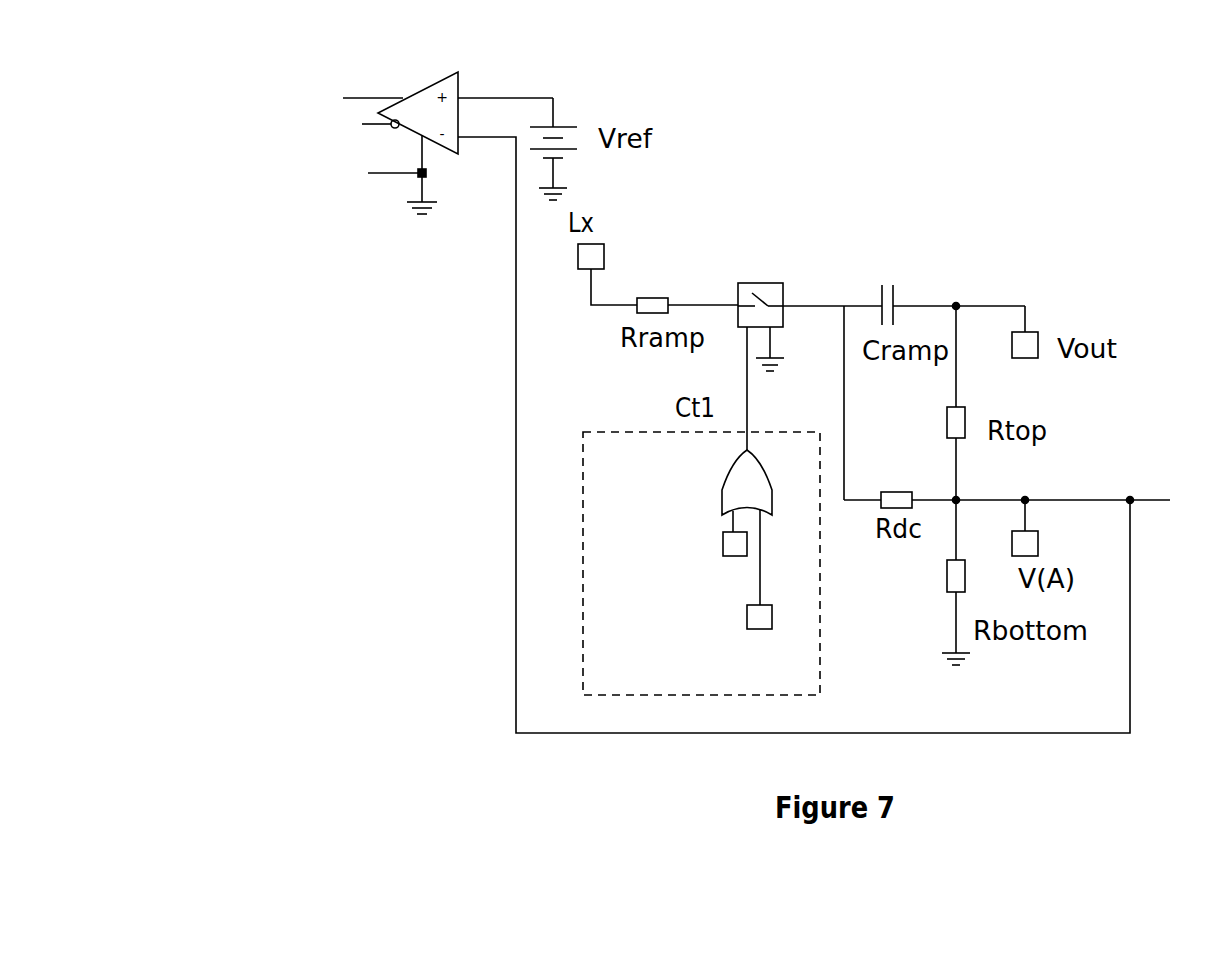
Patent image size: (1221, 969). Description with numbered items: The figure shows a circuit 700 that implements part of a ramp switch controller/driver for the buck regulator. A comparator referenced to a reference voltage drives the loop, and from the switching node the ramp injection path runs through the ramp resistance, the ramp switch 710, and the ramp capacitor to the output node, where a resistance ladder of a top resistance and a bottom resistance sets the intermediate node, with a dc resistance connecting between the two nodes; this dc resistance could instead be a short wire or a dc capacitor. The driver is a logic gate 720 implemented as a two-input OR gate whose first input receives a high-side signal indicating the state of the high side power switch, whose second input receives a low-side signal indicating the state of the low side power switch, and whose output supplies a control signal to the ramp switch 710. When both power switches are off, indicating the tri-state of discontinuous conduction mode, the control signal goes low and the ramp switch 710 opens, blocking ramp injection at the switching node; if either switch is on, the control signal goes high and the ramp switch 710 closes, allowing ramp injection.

The circuit 700 is at (338, 687).
The ramp switch 710 is at (783, 285).
The logic gate 720 is at (725, 495).